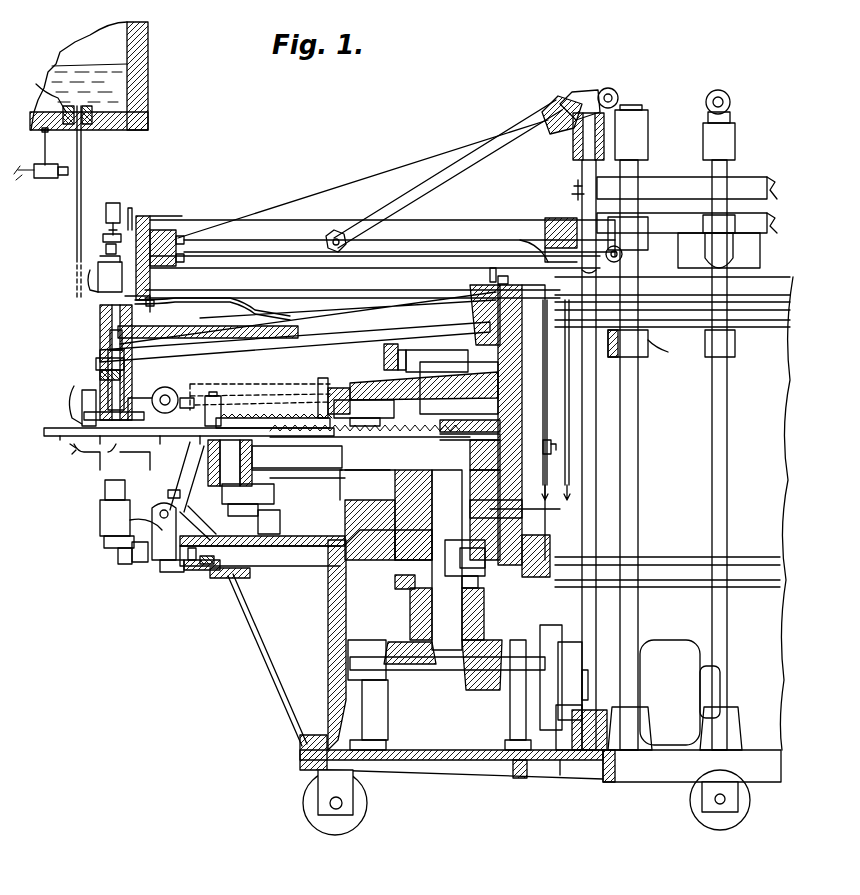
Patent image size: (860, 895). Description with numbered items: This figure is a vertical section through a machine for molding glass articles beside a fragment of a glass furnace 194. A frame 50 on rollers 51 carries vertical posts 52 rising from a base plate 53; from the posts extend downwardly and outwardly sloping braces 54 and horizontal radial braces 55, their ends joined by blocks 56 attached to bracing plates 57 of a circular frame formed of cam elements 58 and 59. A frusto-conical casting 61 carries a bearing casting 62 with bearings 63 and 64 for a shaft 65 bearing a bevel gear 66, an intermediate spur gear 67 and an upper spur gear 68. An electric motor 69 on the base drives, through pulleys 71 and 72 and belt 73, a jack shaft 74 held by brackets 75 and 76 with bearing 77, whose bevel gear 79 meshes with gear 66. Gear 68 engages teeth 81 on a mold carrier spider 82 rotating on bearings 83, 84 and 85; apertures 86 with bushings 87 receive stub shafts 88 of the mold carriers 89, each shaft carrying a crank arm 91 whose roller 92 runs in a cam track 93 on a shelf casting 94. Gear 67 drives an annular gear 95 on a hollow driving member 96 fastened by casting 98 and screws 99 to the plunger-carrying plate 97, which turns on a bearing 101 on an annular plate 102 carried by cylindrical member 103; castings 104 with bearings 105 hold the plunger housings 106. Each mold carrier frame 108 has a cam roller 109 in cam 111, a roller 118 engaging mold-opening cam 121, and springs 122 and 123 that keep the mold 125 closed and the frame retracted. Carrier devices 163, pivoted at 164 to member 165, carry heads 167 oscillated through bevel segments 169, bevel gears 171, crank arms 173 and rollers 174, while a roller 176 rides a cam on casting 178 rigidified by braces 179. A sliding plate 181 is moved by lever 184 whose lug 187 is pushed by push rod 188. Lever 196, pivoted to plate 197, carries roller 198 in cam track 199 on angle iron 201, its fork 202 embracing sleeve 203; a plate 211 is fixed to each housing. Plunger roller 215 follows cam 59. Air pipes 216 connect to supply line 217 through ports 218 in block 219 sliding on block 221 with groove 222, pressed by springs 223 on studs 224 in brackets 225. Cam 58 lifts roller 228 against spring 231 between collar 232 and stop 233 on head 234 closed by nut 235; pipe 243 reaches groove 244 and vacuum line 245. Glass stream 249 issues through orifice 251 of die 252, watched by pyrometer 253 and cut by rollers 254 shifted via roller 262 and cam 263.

The frame 50 is at (296, 782).
The rollers 51 is at (364, 812).
The vertical standards or posts 52 is at (712, 506).
The base plate 53 is at (490, 770).
The braces 54 is at (450, 166).
The braces 55 is at (434, 244).
The blocks 56 is at (170, 228).
The bracing plates 57 is at (376, 264).
The cam element 58 is at (278, 228).
The cam element 59 is at (232, 270).
The casting 61 is at (325, 606).
The bearing casting 62 is at (380, 540).
The bearing 63 is at (462, 554).
The bearing 64 is at (484, 612).
The shaft 65 is at (410, 604).
The bevel gear 66 is at (388, 642).
The spur gear 67 is at (400, 580).
The spur gear 68 is at (420, 470).
The electric motor 69 is at (652, 656).
The pulley 71 is at (552, 714).
The pulley 72 is at (560, 640).
The belt 73 is at (560, 628).
The jack shaft 74 is at (438, 668).
The bracket 75 is at (388, 720).
The bracket 76 is at (508, 722).
The bearing 77 is at (340, 660).
The bevel gear 79 is at (470, 690).
The teeth 81 is at (466, 466).
The mold carrier spider 82 is at (386, 474).
The bearing 83 is at (450, 432).
The bearing 84 is at (522, 509).
The bearing 85 is at (313, 465).
The apertures 86 is at (297, 458).
The bushings or bearing members 87 is at (282, 464).
The stub shafts 88 is at (230, 463).
The mold carriers 89 is at (272, 430).
The crank arm 91 is at (274, 492).
The roller 92 is at (280, 522).
The cam track 93 is at (258, 510).
The shelf casting 94 is at (310, 566).
The annular gear 95 is at (478, 584).
The hollow cylindrical driving member 96 is at (544, 552).
The plunger-carrying plate 97 is at (498, 306).
The connecting and bearing-carrying casting 98 is at (488, 278).
The screws 99 is at (530, 262).
The bearing 101 is at (466, 400).
The annular plate 102 is at (420, 400).
The cylindrical member 103 is at (470, 452).
The castings 104 is at (100, 316).
The bearings 105 is at (100, 334).
The plunger sleeve or housing 106 is at (108, 352).
The mold carrier frame 108 is at (48, 432).
The cam roller 109 is at (342, 388).
The cam 111 is at (350, 410).
The roller 118 is at (212, 400).
The mold-opening and closing cam 121 is at (282, 398).
The coil spring 122 is at (322, 376).
The coil spring 123 is at (410, 436).
The mold 125 is at (88, 478).
The carrier devices 163 is at (100, 520).
The pivot 164 is at (156, 548).
The actuator carrying member 165 is at (192, 572).
The head 167 is at (104, 490).
The bevel gear segments 169 is at (104, 542).
The bevel gears 171 is at (126, 556).
The crank arm 173 is at (184, 572).
The roller 174 is at (206, 568).
The roller 176 is at (160, 574).
The casting 178 is at (228, 584).
The braces 179 is at (270, 640).
The sliding plate 181 is at (174, 470).
The lever 184 is at (200, 416).
The operating lug 187 is at (168, 494).
The push rod 188 is at (182, 506).
The glass furnace 194 is at (152, 88).
The lever 196 is at (338, 340).
The carrying plate 197 is at (244, 324).
The roller 198 is at (400, 350).
The cam track 199 is at (390, 344).
The angle iron 201 is at (412, 360).
The fork 202 is at (100, 372).
The sleeve 203 is at (96, 362).
The plate 211 is at (84, 416).
The roller 215 is at (146, 220).
The pipes 216 is at (200, 300).
The air supply line 217 is at (548, 488).
The ports 218 is at (486, 326).
The block 219 is at (620, 278).
The block 221 is at (600, 306).
The registering port or groove 222 is at (580, 284).
The springs 223 is at (618, 332).
The studs 224 is at (580, 366).
The supporting brackets 225 is at (674, 362).
The roller 228 is at (132, 212).
The coil spring 231 is at (103, 238).
The collar 232 is at (106, 249).
The stop 233 is at (106, 212).
The head 234 is at (98, 278).
The nut and packing 235 is at (100, 256).
The pipe or tube 243 is at (152, 296).
The registering port or groove 244 is at (600, 296).
The vacuum line 245 is at (570, 460).
The stream 249 is at (68, 150).
The orifice 251 is at (83, 132).
The die 252 is at (36, 84).
The radiation pyrometer 253 is at (45, 182).
The rollers 254 is at (74, 396).
The roller 262 is at (176, 390).
The cam 263 is at (188, 398).